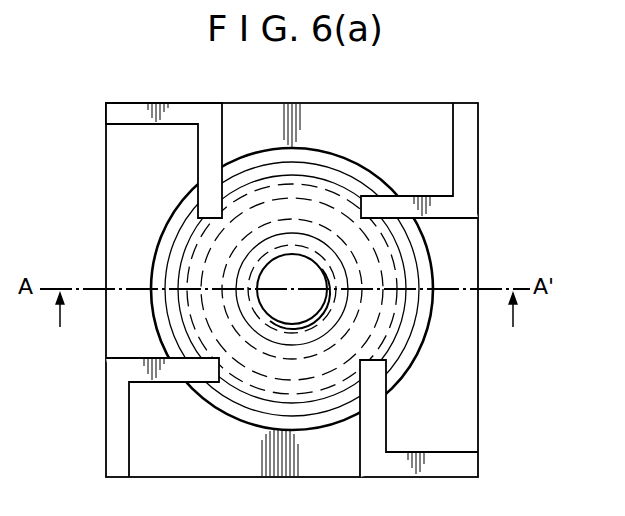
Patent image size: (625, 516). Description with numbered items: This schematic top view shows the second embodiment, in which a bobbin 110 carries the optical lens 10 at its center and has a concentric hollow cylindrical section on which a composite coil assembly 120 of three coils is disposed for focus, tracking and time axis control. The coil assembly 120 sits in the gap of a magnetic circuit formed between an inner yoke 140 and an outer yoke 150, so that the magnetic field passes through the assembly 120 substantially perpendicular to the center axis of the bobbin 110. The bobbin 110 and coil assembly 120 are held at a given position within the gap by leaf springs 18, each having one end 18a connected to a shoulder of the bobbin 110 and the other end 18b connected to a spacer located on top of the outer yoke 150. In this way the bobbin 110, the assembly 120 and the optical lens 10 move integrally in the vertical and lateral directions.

The optical lens 10 is at (300, 262).
The leaf spring 18 is at (473, 137).
The one end of the leaf spring 18a is at (215, 152).
The other end of the leaf spring 18b is at (110, 111).
The bobbin 110 is at (187, 317).
The composite coil assembly 120 is at (180, 236).
The inner yoke 140 is at (377, 262).
The outer yoke 150 is at (478, 353).